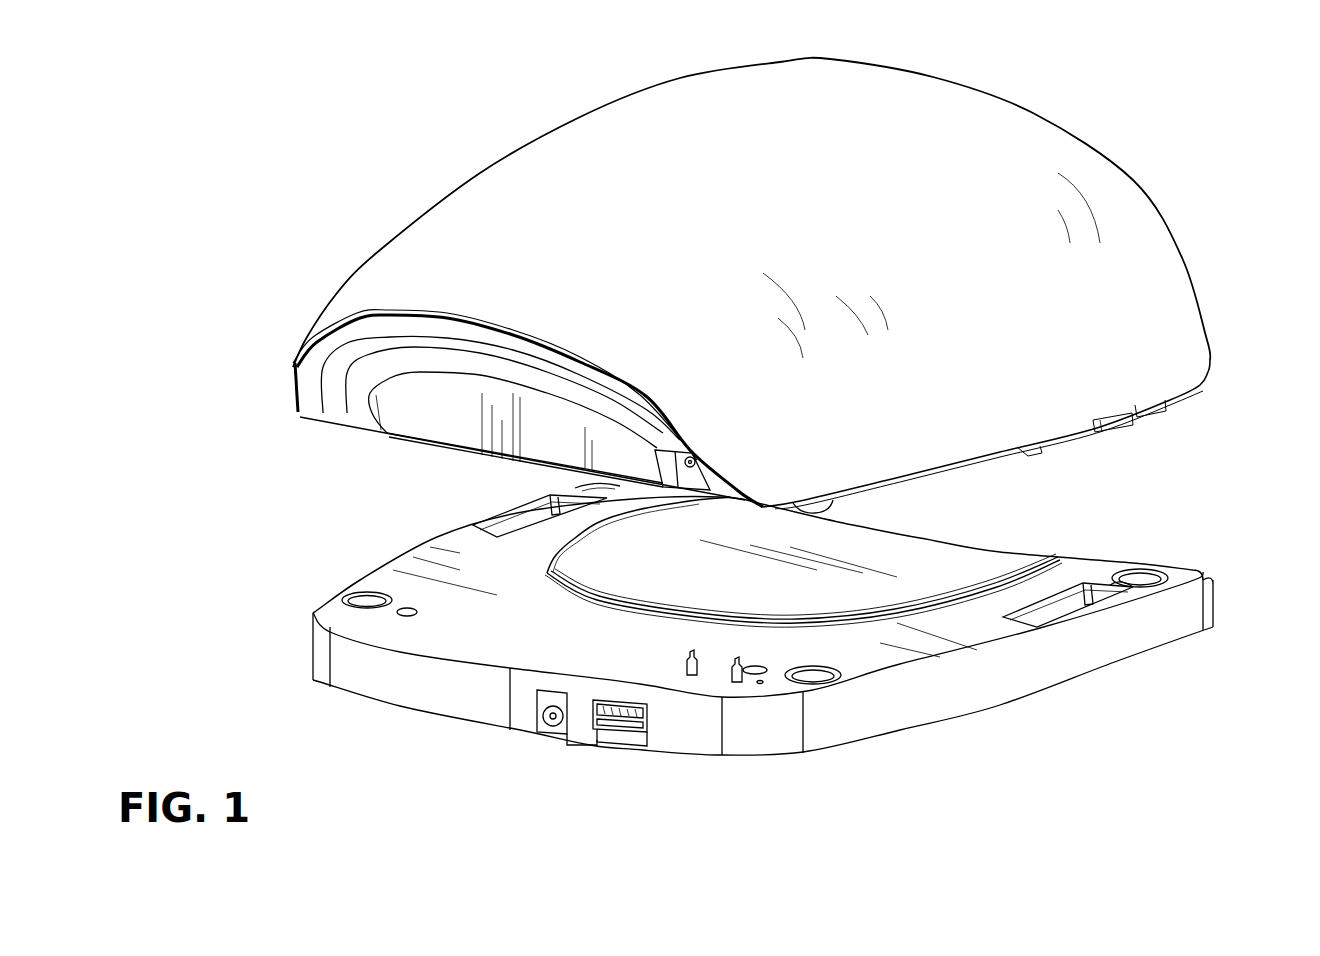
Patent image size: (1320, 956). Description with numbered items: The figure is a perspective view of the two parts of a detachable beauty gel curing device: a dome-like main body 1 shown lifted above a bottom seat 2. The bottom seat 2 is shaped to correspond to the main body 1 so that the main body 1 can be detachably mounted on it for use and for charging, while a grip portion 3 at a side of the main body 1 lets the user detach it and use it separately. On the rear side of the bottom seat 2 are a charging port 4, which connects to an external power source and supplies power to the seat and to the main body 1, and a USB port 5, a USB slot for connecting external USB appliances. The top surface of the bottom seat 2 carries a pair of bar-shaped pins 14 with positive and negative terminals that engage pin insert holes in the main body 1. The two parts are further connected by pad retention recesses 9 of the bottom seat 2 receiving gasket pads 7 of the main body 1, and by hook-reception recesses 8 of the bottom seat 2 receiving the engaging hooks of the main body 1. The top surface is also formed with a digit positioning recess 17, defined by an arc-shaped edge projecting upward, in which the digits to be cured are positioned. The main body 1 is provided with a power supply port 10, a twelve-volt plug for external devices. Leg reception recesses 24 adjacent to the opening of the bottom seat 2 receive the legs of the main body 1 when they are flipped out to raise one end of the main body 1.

The main body 1 is at (1168, 337).
The bottom seat 2 is at (983, 687).
The grip portion 3 is at (432, 415).
The charging port 4 is at (550, 733).
The USB port 5 is at (617, 730).
The gasket pads 7 is at (836, 503).
The hook-reception recesses 8 is at (500, 525).
The pad retention recesses 9 is at (343, 590).
The power supply port 10 is at (497, 557).
The pins 14 is at (735, 680).
The digit positioning recess 17 is at (907, 545).
The leg reception recesses 24 is at (503, 527).